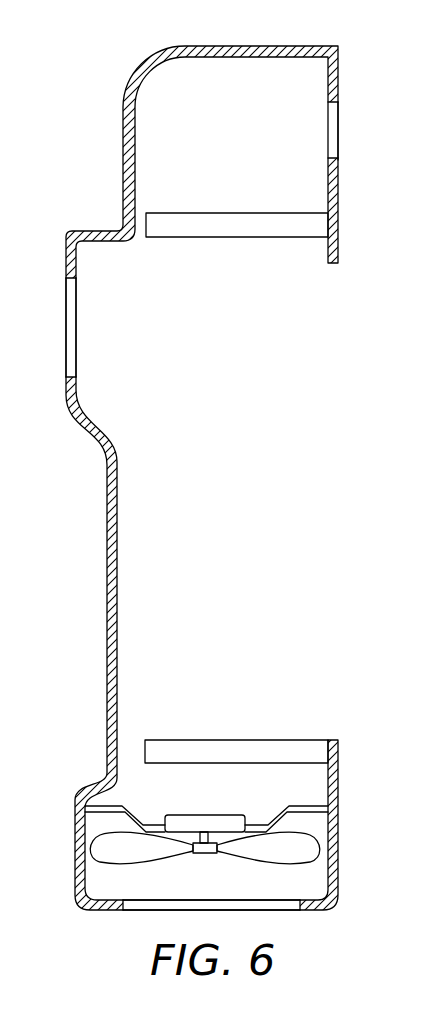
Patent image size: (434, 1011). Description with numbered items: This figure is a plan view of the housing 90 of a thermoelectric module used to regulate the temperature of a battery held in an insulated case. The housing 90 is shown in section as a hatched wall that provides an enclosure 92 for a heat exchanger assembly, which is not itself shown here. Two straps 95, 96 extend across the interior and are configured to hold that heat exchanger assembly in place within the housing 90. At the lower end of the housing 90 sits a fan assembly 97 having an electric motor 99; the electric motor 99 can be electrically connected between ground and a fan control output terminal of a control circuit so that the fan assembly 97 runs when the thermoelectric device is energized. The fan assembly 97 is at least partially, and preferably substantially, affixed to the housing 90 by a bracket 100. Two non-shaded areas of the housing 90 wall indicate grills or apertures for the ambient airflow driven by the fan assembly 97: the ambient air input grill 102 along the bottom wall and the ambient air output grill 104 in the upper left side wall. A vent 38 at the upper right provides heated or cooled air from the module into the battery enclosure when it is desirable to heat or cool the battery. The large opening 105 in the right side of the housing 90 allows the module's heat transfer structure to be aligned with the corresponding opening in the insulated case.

The vent 38 is at (338, 125).
The housing 90 is at (128, 457).
The enclosure 92 is at (231, 350).
The strap 95 is at (275, 745).
The strap 96 is at (173, 237).
The fan assembly 97 is at (204, 855).
The electric motor 99 is at (200, 818).
The bracket 100 is at (110, 808).
The ambient air input grill 102 is at (285, 907).
The ambient air output grill 104 is at (68, 330).
The opening 105 is at (332, 263).